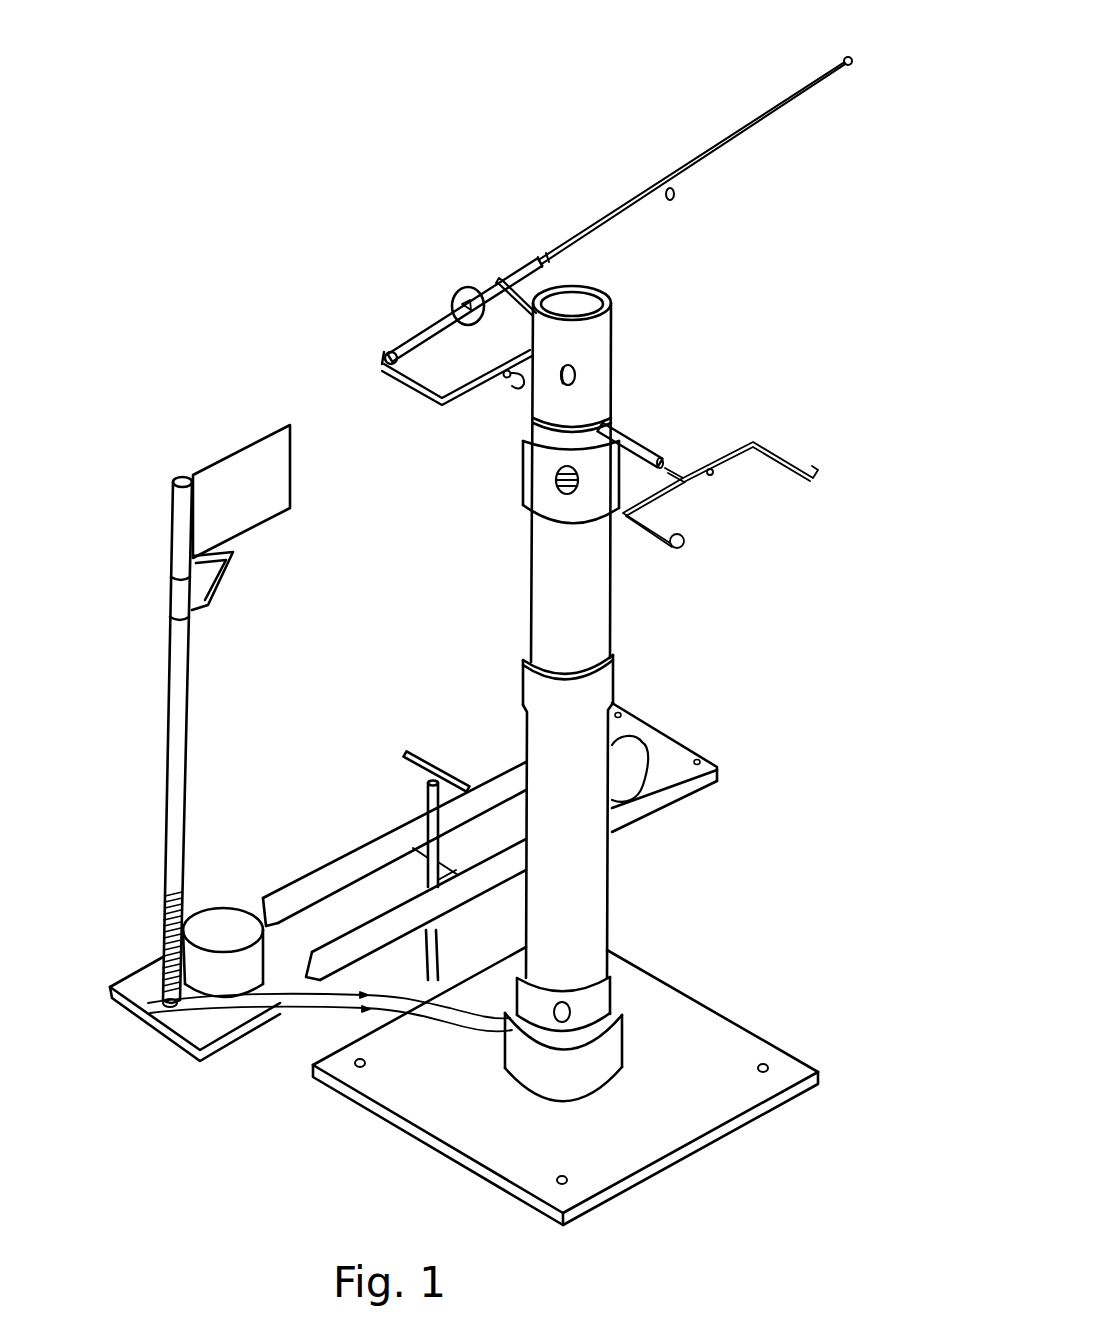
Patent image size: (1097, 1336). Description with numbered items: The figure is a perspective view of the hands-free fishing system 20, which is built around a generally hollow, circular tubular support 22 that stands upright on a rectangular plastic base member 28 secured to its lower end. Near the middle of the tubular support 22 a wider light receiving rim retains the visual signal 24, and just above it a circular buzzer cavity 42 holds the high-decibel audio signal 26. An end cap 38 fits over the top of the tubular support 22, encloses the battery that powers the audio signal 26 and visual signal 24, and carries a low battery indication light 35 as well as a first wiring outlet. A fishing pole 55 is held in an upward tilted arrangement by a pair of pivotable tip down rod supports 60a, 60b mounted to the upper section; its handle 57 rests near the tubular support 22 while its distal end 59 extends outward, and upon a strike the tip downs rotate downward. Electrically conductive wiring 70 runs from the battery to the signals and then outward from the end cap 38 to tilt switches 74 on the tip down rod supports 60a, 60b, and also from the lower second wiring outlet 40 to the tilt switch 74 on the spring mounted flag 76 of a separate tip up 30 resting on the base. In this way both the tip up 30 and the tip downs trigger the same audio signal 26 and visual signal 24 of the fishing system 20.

The fishing system 20 is at (817, 573).
The tubular support 22 is at (609, 898).
The visual signal 24 is at (612, 616).
The audio signal 26 is at (552, 486).
The base member 28 is at (710, 1046).
The tip up 30 is at (337, 858).
The low battery indication light 35 is at (585, 375).
The end cap 38 is at (623, 338).
The second wiring outlet 40 is at (571, 1008).
The buzzer cavity 42 is at (557, 474).
The fishing pole 55 is at (577, 236).
The handle 57 is at (403, 345).
The distal end 59 is at (807, 87).
The tip down rod support 60a is at (780, 450).
The tip down rod support 60b is at (422, 404).
The wiring 70 is at (300, 1028).
The tilt switch 74 is at (505, 378).
The spring mounted flag 76 is at (165, 813).